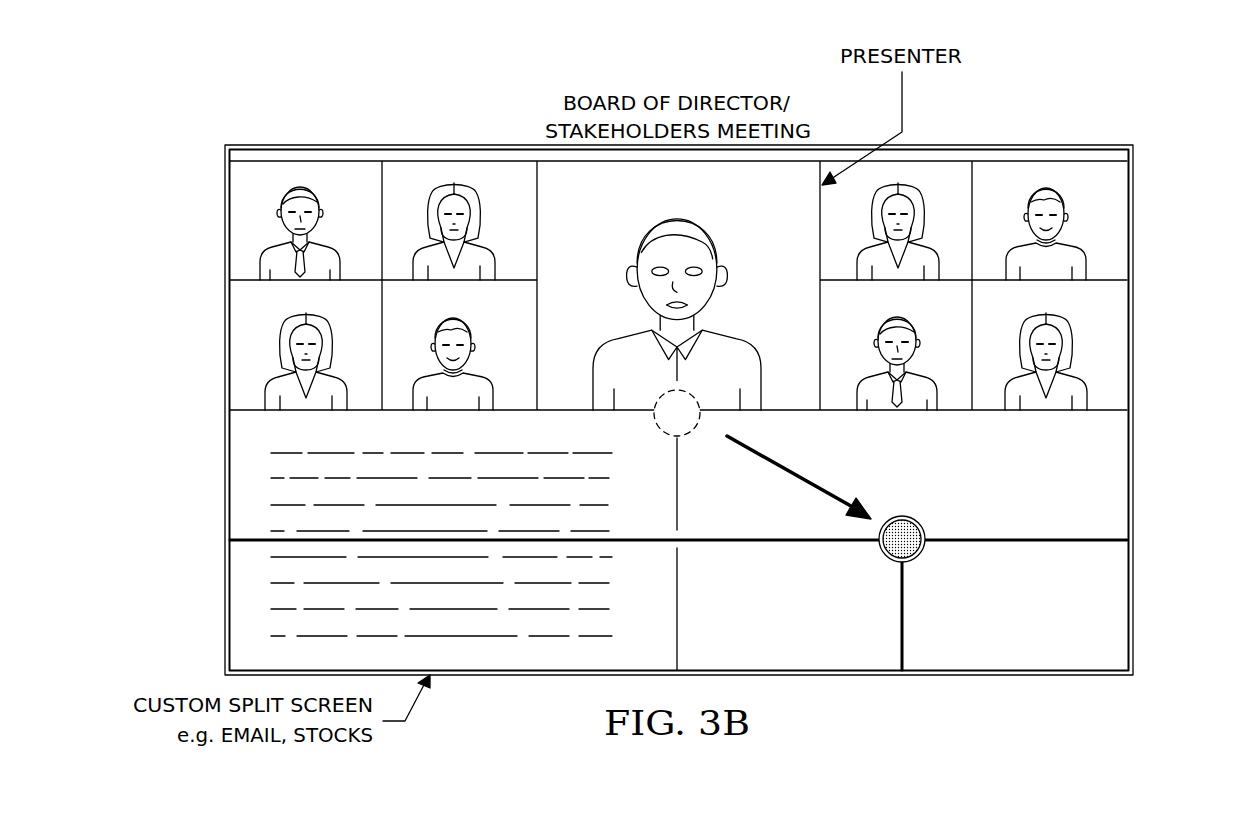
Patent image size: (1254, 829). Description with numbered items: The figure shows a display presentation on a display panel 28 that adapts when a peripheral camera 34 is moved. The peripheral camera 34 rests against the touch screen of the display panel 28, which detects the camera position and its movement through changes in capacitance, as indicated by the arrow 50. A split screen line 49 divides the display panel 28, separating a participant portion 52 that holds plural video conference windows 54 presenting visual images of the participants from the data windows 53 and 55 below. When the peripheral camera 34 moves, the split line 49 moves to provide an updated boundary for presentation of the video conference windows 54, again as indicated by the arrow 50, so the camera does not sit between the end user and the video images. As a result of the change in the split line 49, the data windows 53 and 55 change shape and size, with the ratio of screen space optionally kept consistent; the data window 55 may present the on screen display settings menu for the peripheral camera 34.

The display panel 28 is at (1043, 156).
The peripheral camera 34 is at (690, 430).
The split screen line 49 is at (240, 394).
The arrow 50 is at (790, 463).
The participant portion 52 is at (737, 403).
The data window 53 is at (997, 660).
The video conference windows 54 is at (1087, 268).
The data window 55 is at (238, 588).